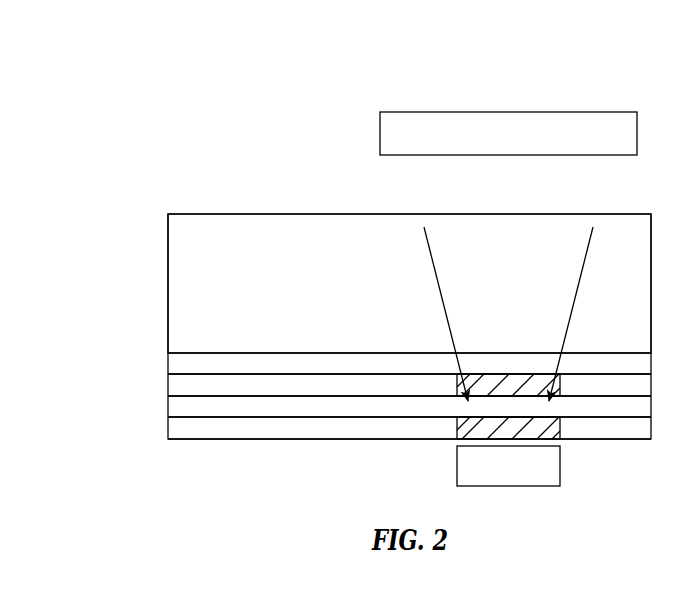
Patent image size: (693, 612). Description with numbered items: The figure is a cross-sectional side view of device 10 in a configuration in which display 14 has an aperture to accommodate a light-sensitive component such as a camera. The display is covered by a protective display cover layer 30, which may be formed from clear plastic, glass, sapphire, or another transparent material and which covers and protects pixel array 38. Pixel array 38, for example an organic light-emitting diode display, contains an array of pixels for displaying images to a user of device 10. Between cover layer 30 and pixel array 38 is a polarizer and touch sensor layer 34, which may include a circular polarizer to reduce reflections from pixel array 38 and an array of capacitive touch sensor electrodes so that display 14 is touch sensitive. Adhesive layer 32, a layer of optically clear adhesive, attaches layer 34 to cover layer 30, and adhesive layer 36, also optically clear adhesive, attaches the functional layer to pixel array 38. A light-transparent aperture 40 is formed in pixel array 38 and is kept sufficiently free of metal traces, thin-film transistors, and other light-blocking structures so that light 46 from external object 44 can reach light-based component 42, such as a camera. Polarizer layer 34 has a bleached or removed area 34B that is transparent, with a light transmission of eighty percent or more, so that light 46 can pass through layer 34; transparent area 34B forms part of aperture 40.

The device 10 is at (134, 179).
The display 14 is at (245, 187).
The display cover layer 30 is at (176, 281).
The adhesive layer 32 is at (176, 360).
The polarizer and touch sensor layer 34 is at (176, 382).
The adhesive layer 36 is at (176, 404).
The pixel array 38 is at (176, 426).
The transparent bleached area 34B is at (510, 377).
The aperture 40 is at (457, 431).
The light-based component 42 is at (553, 462).
The external object 44 is at (504, 116).
The light 46 is at (437, 265).